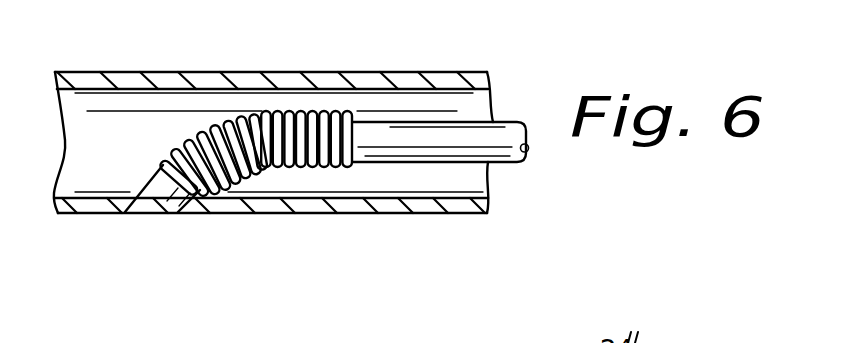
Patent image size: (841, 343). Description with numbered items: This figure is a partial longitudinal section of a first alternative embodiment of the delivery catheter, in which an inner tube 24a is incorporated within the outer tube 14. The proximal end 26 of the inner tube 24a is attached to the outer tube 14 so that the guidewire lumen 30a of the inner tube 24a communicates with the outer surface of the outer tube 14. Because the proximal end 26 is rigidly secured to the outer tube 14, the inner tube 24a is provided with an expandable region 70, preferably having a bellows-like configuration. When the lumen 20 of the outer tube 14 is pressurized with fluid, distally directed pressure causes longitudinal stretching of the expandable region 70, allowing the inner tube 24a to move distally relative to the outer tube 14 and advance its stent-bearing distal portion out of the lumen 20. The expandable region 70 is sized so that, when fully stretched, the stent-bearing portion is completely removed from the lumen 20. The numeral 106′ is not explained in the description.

The catheter assembly 106′ is at (376, 60).
The outer tube 14 is at (436, 70).
The lumen 20 is at (86, 175).
The inner tube 24a is at (521, 120).
The proximal end 26 is at (127, 220).
The guidewire lumen 30a is at (529, 148).
The expandable region 70 is at (277, 173).